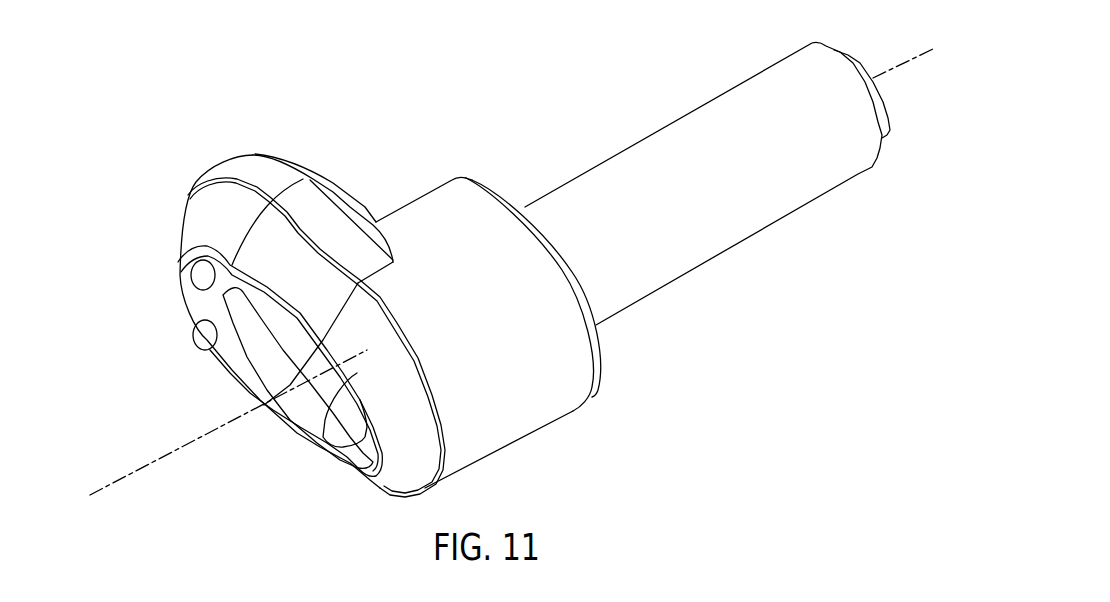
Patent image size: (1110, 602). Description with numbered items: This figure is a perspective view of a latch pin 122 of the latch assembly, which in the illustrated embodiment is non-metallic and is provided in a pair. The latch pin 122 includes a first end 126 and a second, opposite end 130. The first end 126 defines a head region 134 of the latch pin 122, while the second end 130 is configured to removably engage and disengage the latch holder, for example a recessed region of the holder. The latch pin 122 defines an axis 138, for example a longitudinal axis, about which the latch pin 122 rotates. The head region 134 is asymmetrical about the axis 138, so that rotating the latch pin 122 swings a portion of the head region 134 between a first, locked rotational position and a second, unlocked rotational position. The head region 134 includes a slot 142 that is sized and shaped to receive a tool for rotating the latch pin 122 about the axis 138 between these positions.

The latch pin 122 is at (162, 190).
The first end 126 is at (373, 367).
The second end 130 is at (817, 160).
The head region 134 is at (258, 247).
The axis 138 is at (120, 482).
The slot 142 is at (263, 342).